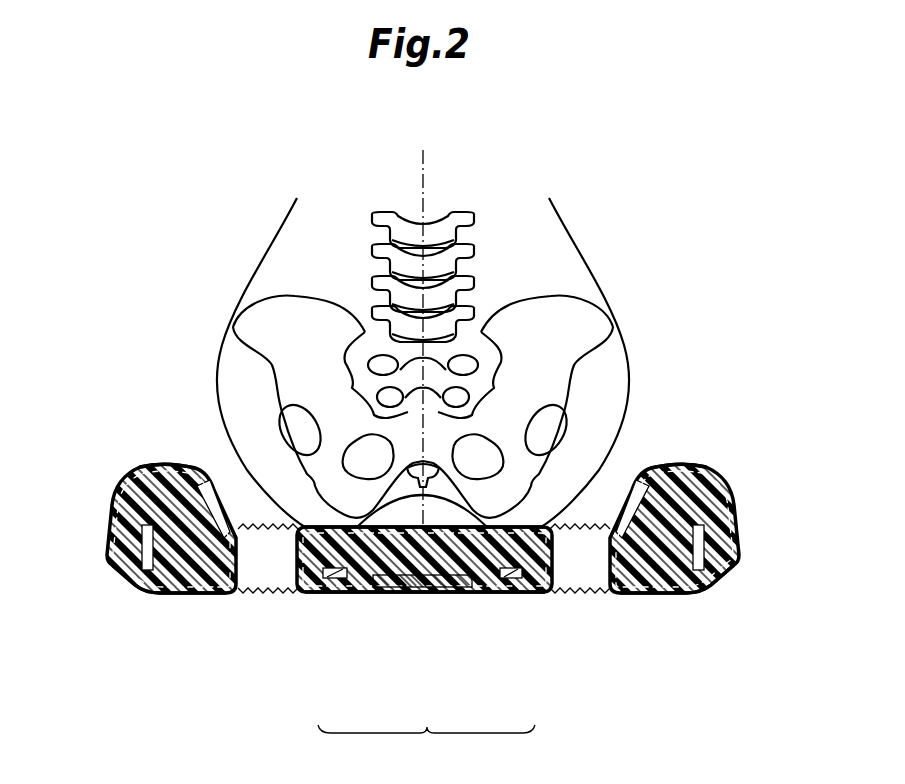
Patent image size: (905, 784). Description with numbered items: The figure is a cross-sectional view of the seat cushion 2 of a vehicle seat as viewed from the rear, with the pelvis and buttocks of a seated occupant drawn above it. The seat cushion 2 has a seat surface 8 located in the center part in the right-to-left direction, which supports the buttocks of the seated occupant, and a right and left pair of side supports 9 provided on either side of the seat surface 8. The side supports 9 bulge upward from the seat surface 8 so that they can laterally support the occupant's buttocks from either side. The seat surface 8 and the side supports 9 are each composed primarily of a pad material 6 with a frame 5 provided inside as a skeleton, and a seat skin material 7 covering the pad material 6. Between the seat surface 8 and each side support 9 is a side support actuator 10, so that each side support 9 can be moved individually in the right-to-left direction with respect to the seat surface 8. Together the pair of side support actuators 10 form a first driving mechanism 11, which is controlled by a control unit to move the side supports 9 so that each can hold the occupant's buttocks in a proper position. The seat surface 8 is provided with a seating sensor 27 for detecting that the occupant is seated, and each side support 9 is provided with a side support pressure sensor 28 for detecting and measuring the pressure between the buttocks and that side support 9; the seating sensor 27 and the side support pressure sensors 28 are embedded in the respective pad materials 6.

The seat cushion 2 is at (688, 410).
The frame 5 is at (146, 548).
The pad material 6 is at (175, 594).
The seat skin material 7 is at (210, 594).
The seat surface 8 is at (457, 520).
The side support 9 is at (110, 492).
The side support actuator 10 is at (270, 598).
The first driving mechanism 11 is at (426, 749).
The seating sensor 27 is at (432, 590).
The side support pressure sensor 28 is at (200, 485).